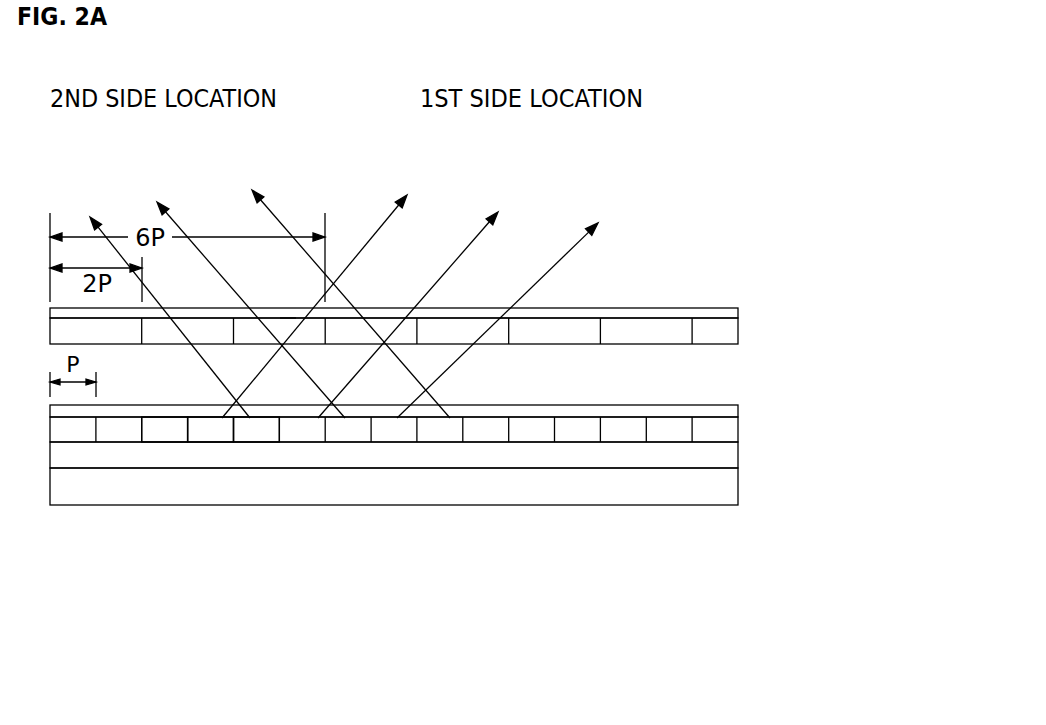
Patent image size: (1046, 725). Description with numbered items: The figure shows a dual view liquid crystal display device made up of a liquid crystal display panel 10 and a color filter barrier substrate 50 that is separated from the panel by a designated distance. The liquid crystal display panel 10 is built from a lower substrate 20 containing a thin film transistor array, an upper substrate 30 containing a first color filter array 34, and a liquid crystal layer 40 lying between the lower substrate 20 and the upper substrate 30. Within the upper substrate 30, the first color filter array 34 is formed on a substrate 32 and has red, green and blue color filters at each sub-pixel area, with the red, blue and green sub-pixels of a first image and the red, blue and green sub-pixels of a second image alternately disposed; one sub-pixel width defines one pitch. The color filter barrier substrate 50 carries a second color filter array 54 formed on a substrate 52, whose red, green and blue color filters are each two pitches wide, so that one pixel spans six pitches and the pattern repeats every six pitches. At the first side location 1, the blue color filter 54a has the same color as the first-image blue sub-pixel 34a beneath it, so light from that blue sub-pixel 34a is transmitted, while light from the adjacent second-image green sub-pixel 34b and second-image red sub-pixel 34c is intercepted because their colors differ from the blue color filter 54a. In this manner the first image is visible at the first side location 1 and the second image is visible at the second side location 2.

The liquid crystal display panel 10 is at (857, 402).
The lower substrate 20 is at (740, 487).
The upper substrate 30 is at (805, 385).
The substrate 32 is at (738, 405).
The first color filter array 34 is at (740, 430).
The sub-pixel B1 34a is at (192, 418).
The sub-pixel G2 34b is at (145, 418).
The sub-pixel R2 34c is at (267, 418).
The liquid crystal layer 40 is at (740, 458).
The color filter barrier substrate 50 is at (800, 285).
The substrate 52 is at (738, 308).
The second color filter array 54 is at (740, 330).
The blue color filter 54a is at (288, 308).
The first side location 1 is at (610, 195).
The second side location 2 is at (73, 188).